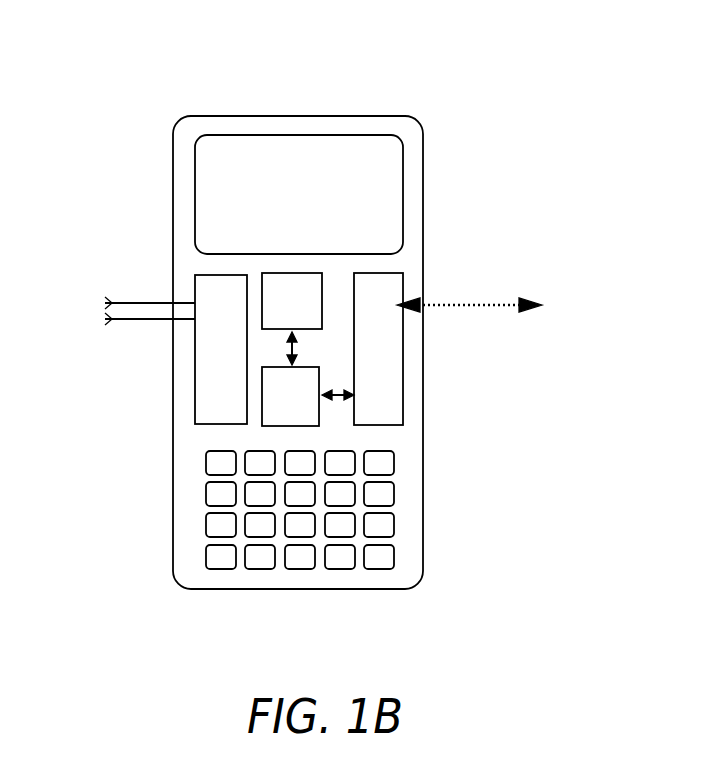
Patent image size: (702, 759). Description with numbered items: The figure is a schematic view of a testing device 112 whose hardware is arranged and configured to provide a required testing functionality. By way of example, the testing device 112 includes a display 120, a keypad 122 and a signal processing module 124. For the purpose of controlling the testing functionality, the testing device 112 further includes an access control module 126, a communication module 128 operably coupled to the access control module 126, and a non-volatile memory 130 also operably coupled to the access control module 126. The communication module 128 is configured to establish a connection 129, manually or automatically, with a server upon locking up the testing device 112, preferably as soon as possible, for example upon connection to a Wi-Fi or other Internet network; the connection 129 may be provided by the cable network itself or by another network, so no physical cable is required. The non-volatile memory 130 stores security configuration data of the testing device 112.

The testing device 112 is at (276, 50).
The display 120 is at (195, 172).
The keypad 122 is at (187, 512).
The signal processing module 124 is at (195, 385).
The access control module 126 is at (308, 410).
The communication module 128 is at (404, 369).
The connection 129 is at (492, 302).
The non-volatile memory 130 is at (310, 315).